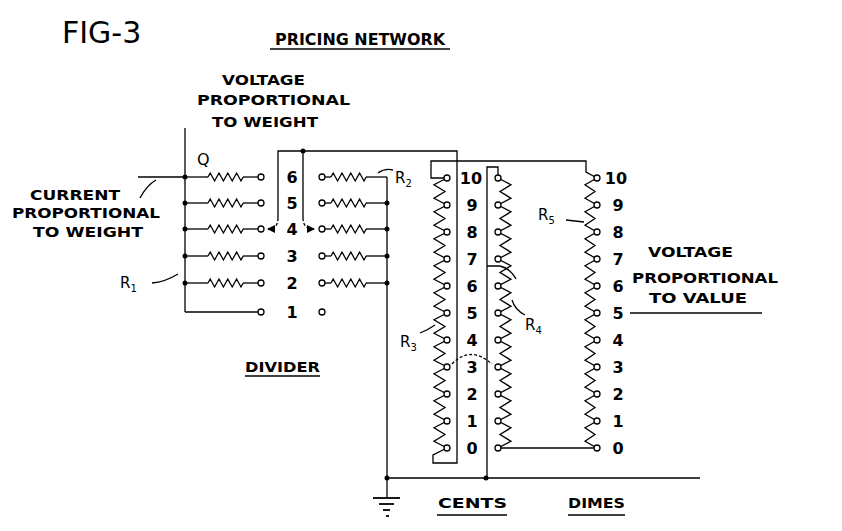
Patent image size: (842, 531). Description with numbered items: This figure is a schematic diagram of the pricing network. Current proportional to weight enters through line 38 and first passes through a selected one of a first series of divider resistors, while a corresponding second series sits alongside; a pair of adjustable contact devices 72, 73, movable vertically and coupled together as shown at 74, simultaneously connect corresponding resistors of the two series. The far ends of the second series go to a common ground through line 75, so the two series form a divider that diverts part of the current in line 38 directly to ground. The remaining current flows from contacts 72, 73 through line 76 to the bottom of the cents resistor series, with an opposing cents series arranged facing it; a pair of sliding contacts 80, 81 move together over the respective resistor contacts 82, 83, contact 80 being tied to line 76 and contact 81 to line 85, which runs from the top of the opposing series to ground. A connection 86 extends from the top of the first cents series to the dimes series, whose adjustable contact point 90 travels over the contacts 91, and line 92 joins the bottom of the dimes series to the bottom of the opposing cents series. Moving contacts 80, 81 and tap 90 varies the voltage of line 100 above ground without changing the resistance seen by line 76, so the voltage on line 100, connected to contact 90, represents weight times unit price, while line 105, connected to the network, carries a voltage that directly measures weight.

The line 38 is at (152, 176).
The line 105 is at (185, 143).
The adjustable contact device 72 is at (268, 240).
The adjustable contact device 73 is at (310, 239).
The connection of contact devices 74 is at (277, 183).
The line 75 is at (386, 402).
The line 76 is at (353, 150).
The sliding contact 80 is at (448, 370).
The sliding contact 81 is at (497, 370).
The resistor contacts 82 is at (443, 421).
The resistor contacts 83 is at (502, 421).
The line 85 is at (513, 280).
The connection 86 is at (489, 161).
The adjustable contact point 90 is at (602, 314).
The contacts 91 is at (600, 396).
The line 92 is at (540, 449).
The line 100 is at (722, 314).